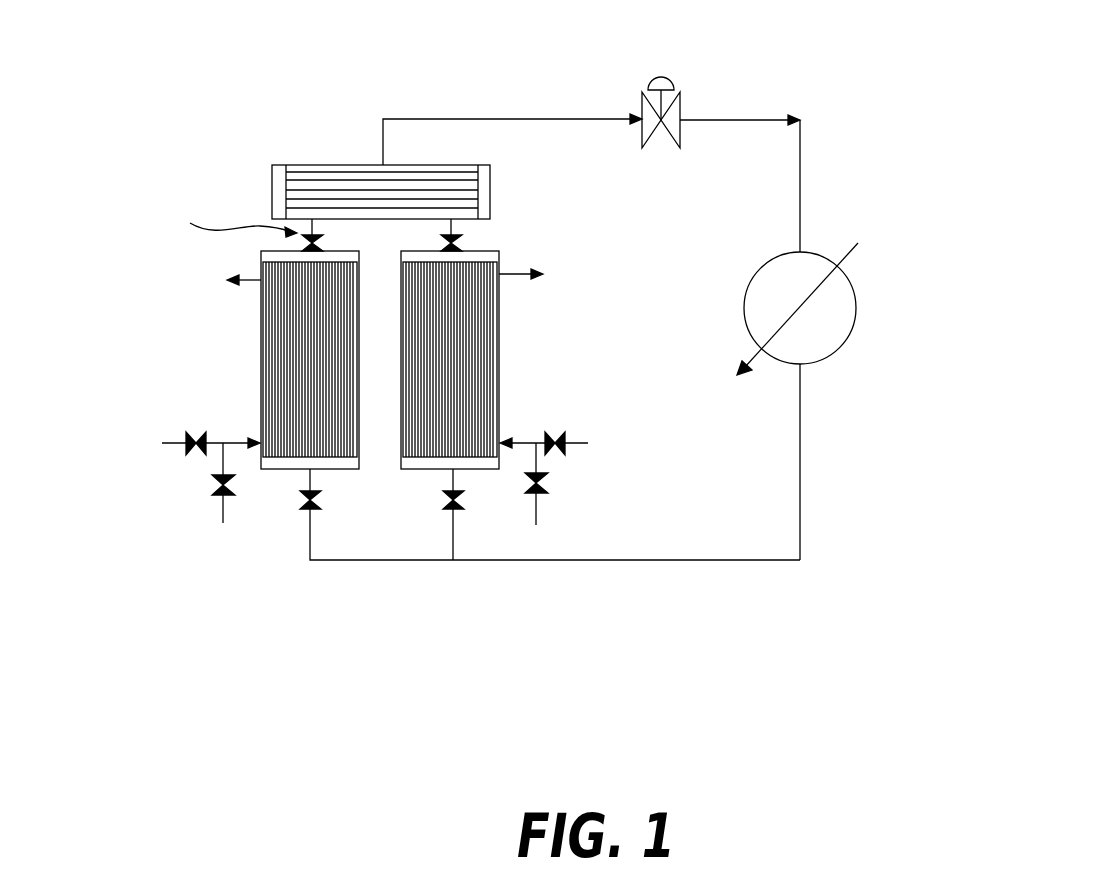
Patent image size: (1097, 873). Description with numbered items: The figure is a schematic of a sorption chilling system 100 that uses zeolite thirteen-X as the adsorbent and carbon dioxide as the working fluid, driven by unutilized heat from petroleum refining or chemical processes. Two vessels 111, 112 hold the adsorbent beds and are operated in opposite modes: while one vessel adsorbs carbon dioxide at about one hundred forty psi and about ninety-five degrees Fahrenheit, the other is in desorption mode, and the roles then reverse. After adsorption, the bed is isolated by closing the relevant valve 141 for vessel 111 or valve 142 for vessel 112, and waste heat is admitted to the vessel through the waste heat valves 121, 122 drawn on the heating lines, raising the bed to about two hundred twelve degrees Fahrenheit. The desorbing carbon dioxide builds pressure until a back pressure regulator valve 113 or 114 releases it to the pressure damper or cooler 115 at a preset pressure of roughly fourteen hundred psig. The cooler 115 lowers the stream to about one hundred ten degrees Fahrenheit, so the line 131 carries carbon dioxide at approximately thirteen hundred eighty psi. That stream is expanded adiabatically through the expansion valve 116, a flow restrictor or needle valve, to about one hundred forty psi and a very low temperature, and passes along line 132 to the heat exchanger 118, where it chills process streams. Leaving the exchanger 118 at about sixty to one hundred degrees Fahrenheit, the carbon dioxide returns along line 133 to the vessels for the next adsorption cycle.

The sorption chilling system 100 is at (963, 83).
The vessel 111 is at (275, 360).
The vessel 112 is at (486, 361).
The back pressure regulator valve 113 is at (302, 247).
The back pressure regulator valve 114 is at (462, 246).
The pressure damper or cooler 115 is at (320, 177).
The expansion valve 116 is at (679, 92).
The heat exchanger 118 is at (850, 337).
The first waste heat supply valve 121 is at (163, 443).
The second waste heat supply valve 122 is at (588, 443).
The line 131 is at (543, 119).
The stage 4 low temperature line 132 is at (800, 150).
The stage 1 return line 133 is at (640, 560).
The valve 141 is at (305, 503).
The valve 142 is at (462, 505).